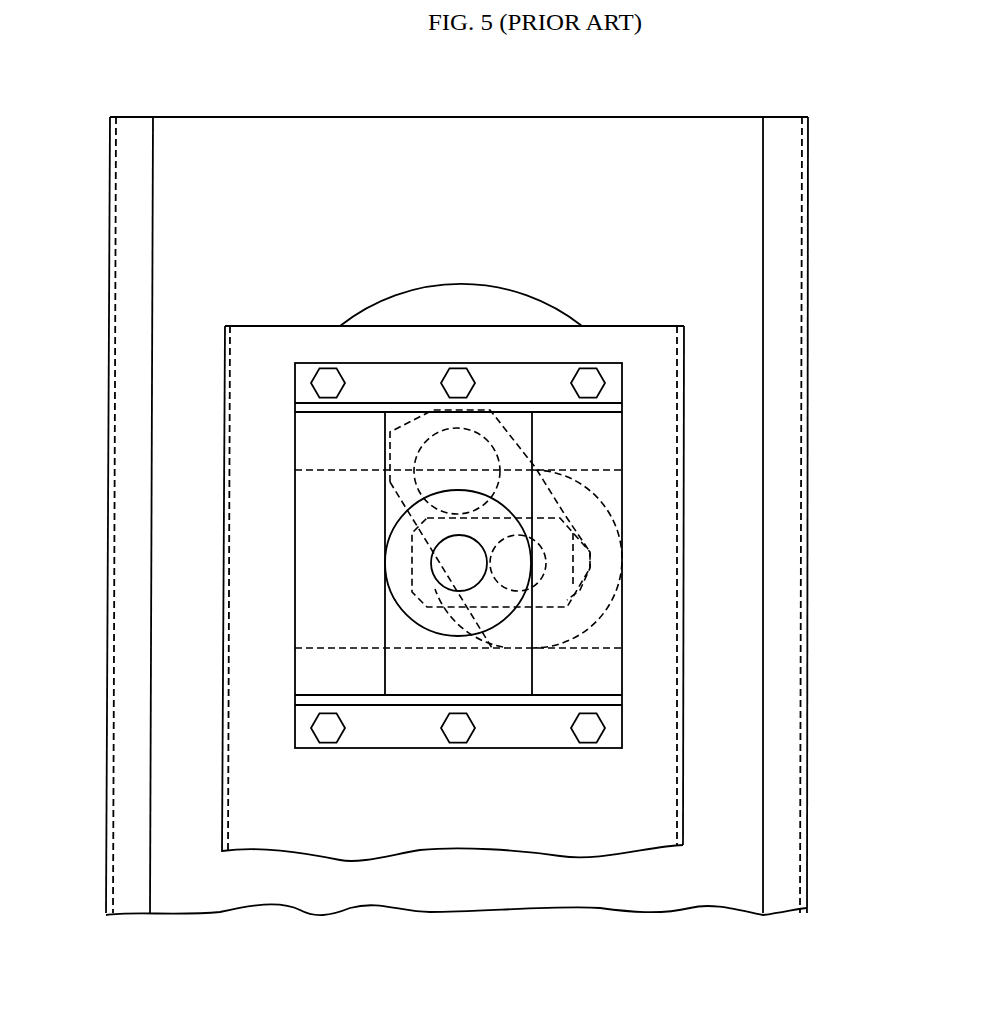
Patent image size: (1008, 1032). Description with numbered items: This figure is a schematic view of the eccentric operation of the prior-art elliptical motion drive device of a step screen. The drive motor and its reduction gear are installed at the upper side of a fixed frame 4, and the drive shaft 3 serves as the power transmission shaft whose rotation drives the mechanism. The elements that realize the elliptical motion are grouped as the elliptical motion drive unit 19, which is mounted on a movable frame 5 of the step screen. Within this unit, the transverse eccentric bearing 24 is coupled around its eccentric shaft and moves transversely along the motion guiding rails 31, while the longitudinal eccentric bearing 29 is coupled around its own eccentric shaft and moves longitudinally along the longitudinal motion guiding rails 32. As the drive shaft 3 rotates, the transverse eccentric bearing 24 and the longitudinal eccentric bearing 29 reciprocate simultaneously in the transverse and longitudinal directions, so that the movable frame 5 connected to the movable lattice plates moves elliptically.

The drive shaft 3 is at (428, 450).
The fixed frame 4 is at (140, 277).
The movable frame 5 is at (250, 360).
The elliptical motion drive unit 19 is at (540, 395).
The transverse eccentric bearing 24 is at (607, 540).
The longitudinal eccentric bearing 29 is at (400, 603).
The motion guiding rails 31 is at (330, 470).
The longitudinal motion guiding rails 32 is at (380, 668).